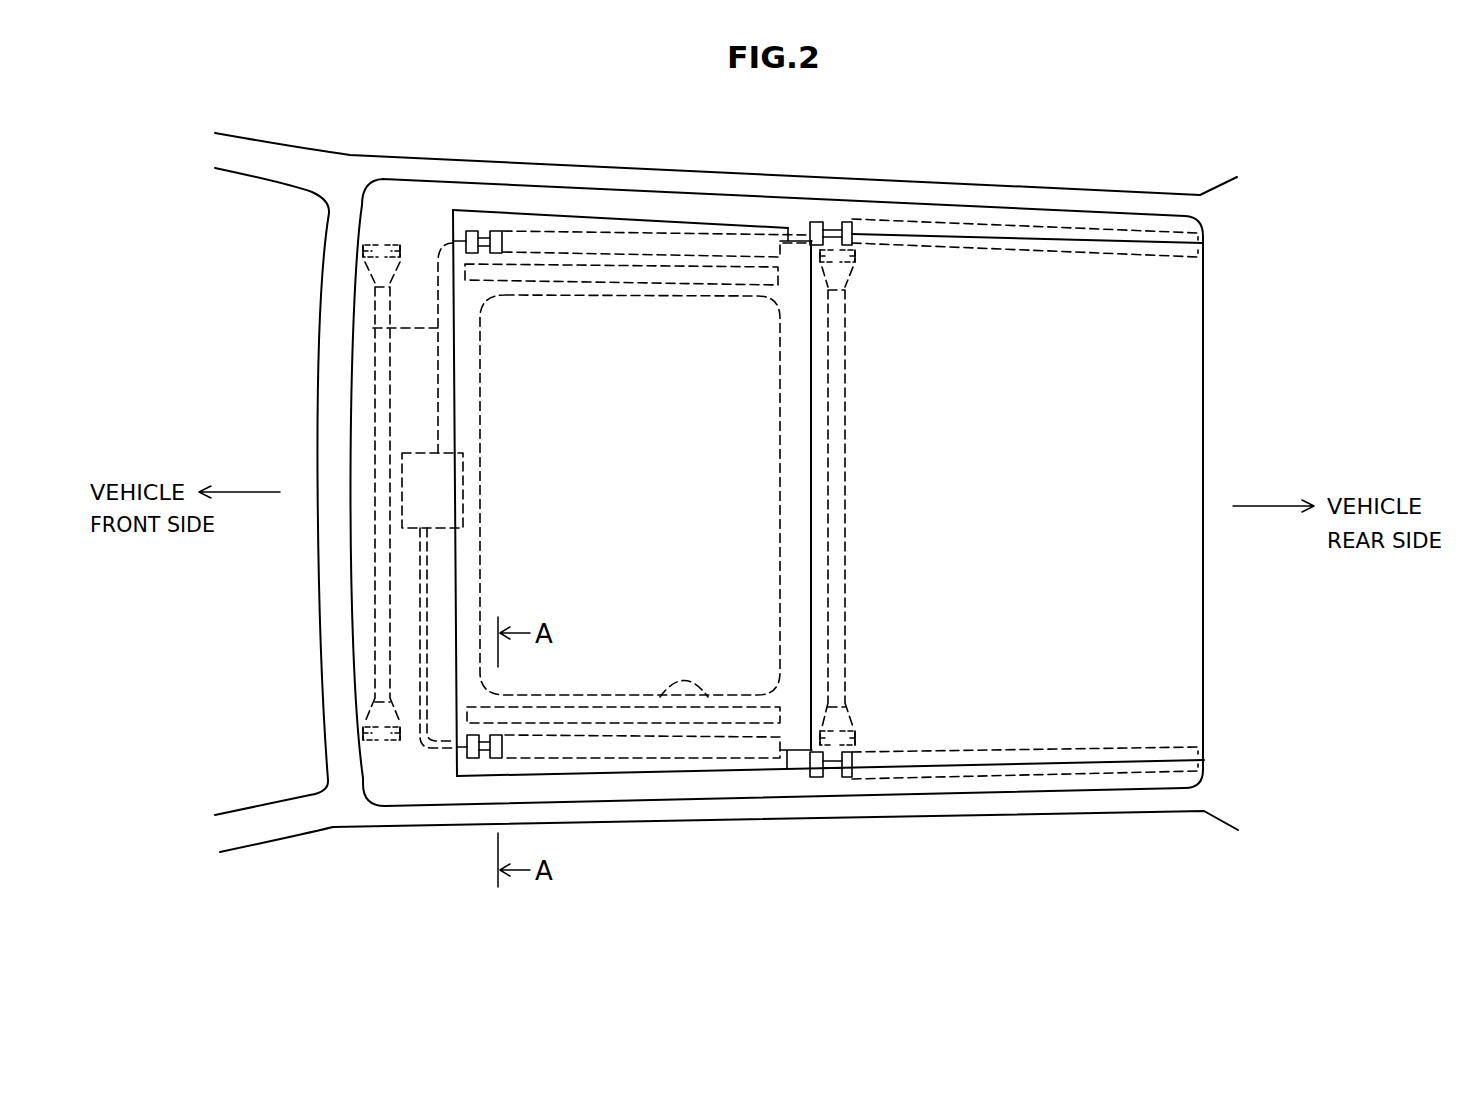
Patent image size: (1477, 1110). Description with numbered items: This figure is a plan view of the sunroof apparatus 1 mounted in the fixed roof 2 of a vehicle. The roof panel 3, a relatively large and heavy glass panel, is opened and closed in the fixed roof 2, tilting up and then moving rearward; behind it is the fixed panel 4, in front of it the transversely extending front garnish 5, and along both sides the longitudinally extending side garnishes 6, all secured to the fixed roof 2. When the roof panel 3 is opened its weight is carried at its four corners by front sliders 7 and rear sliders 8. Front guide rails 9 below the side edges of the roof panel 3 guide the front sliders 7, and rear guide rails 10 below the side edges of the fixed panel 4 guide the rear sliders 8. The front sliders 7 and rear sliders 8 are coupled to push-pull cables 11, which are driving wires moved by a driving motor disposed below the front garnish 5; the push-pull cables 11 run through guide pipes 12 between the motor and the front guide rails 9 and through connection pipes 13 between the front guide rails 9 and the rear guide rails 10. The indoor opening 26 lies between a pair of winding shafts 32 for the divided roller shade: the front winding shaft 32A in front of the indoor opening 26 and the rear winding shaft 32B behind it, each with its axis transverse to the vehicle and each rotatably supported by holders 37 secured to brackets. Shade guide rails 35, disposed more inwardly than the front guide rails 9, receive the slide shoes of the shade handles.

The sunroof apparatus 1 is at (356, 122).
The fixed roof 2 is at (553, 178).
The roof panel 3 is at (547, 663).
The fixed panel 4 is at (1052, 727).
The front garnish 5 is at (414, 762).
The side garnish 6 is at (688, 207).
The front slider 7 is at (488, 230).
The rear slider 8 is at (838, 222).
The front guide rail 9 is at (628, 231).
The rear guide rail 10 is at (985, 219).
The push-pull cable 11 is at (329, 495).
The guide pipe 12 is at (368, 331).
The connection pipe 13 is at (788, 226).
The indoor opening 26 is at (706, 700).
The winding shaft 32 is at (614, 495).
The front winding shaft 32A is at (373, 432).
The rear winding shaft 32B is at (848, 440).
The shade guide rail 35 is at (583, 272).
The holder 37 is at (360, 249).